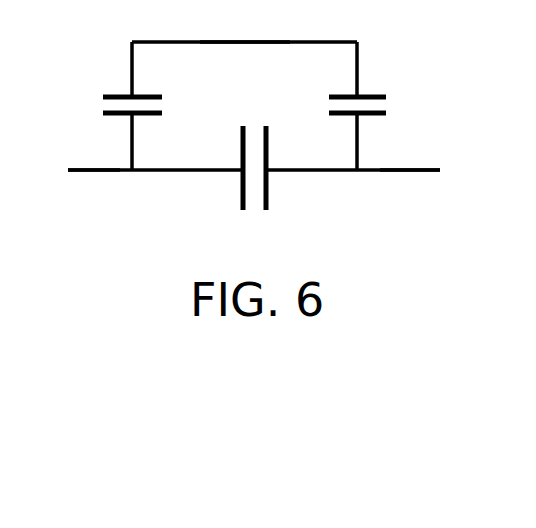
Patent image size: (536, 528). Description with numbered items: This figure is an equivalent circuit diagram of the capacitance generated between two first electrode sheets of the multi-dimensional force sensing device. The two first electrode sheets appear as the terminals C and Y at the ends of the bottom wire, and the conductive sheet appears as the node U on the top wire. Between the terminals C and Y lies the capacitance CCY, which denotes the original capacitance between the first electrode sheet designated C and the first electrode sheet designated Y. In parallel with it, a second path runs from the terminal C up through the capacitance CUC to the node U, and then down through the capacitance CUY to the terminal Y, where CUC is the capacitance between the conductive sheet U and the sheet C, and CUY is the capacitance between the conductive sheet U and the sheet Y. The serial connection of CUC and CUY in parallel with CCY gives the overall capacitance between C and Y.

The capacitance Cuc CUC is at (100, 114).
The capacitance Cuy CUY is at (388, 114).
The capacitance Ccy' CCY is at (250, 194).
The conductive sheet node U is at (245, 21).
The first electrode sheet node C is at (94, 191).
The first electrode sheet node Y is at (410, 190).